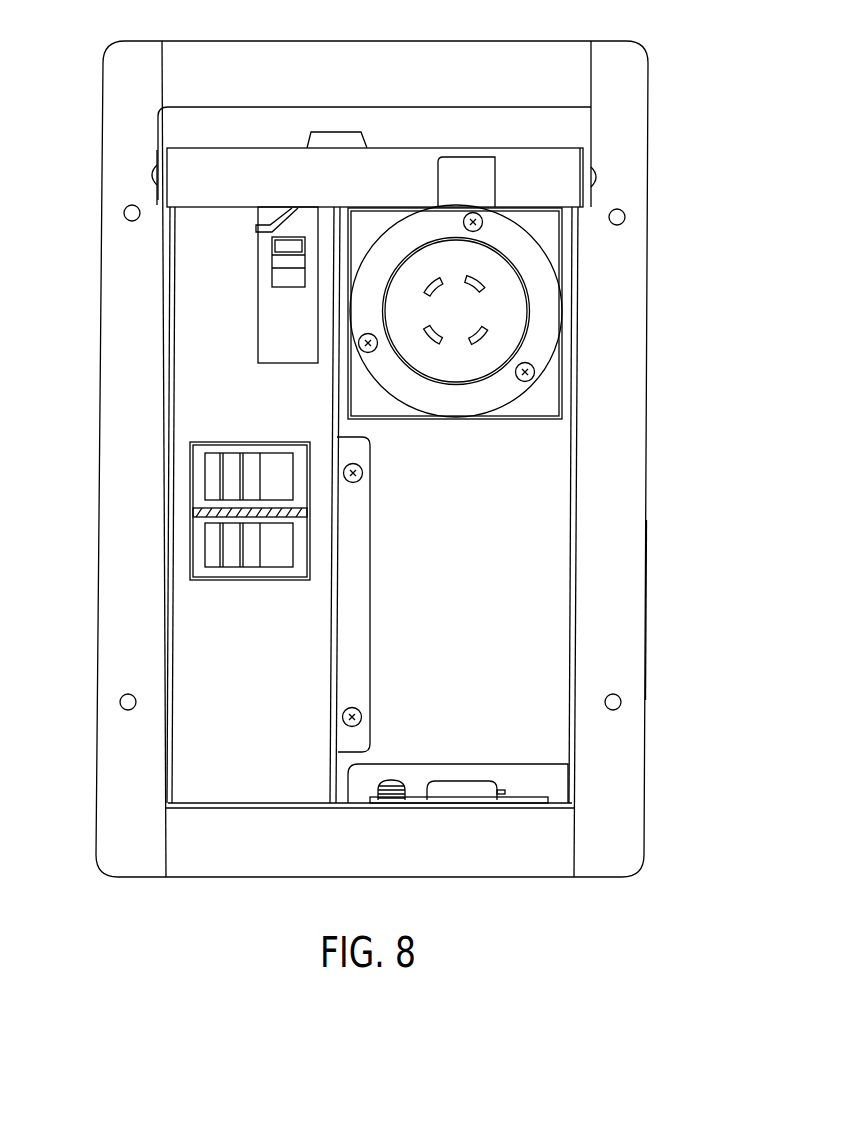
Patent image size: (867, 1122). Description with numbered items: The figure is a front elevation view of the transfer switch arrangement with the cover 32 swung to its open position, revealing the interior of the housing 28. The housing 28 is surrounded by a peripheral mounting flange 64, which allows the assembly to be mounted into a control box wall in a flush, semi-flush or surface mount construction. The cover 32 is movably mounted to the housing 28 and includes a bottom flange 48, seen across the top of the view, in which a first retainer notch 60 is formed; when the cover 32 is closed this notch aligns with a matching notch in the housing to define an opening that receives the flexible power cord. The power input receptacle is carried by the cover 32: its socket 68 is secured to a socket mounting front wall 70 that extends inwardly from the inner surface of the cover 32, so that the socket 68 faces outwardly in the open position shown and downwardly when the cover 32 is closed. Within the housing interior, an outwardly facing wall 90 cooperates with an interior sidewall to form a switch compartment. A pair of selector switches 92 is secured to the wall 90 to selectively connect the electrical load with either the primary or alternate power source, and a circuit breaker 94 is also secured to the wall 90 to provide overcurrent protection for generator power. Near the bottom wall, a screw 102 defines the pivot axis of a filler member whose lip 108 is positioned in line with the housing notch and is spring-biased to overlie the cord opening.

The housing 28 is at (660, 273).
The cover 32 is at (540, 144).
The bottom flange 48 is at (421, 106).
The first retainer notch 60 is at (495, 178).
The peripheral mounting flange 64 is at (660, 603).
The socket 68 is at (520, 408).
The socket mounting front wall 70 is at (521, 325).
The outwardly facing wall 90 is at (190, 338).
The selector switches 92 is at (182, 481).
The circuit breaker 94 is at (252, 293).
The screw 102 is at (394, 782).
The lip 108 is at (462, 782).